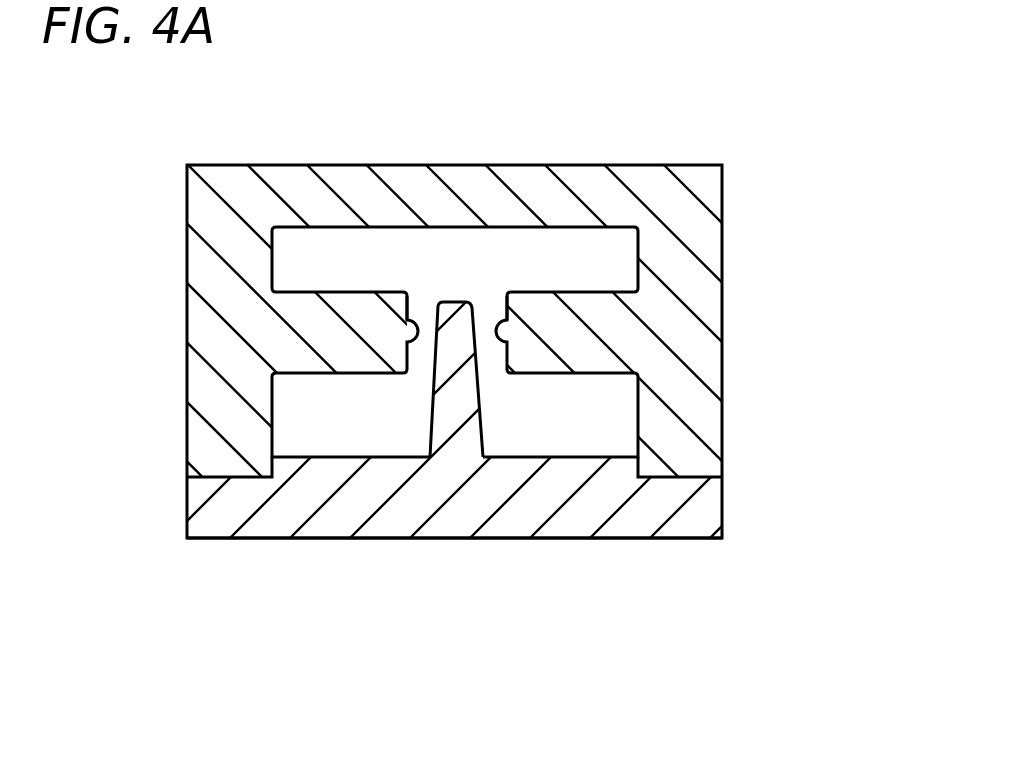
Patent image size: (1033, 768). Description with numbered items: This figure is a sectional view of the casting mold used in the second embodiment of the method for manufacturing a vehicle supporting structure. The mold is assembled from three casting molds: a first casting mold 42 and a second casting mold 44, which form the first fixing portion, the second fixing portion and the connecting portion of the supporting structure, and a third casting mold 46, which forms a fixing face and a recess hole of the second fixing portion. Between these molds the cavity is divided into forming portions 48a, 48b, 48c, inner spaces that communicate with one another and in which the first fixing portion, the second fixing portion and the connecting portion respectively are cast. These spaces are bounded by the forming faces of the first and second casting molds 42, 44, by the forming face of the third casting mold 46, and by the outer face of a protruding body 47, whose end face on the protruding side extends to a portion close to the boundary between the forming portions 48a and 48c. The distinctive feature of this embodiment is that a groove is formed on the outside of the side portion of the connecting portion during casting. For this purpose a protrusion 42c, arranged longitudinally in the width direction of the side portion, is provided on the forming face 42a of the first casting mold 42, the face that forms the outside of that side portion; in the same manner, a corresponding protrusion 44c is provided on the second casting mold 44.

The first casting mold 42 is at (516, 404).
The second casting mold 44 is at (613, 165).
The forming face 42a is at (507, 310).
The protrusion 42c is at (634, 215).
The protrusion 44c is at (457, 332).
The third casting mold 46 is at (712, 505).
The protruding body 47 is at (436, 400).
The forming portion 48a is at (610, 252).
The forming portion 48b is at (620, 428).
The forming portion 48c is at (422, 353).